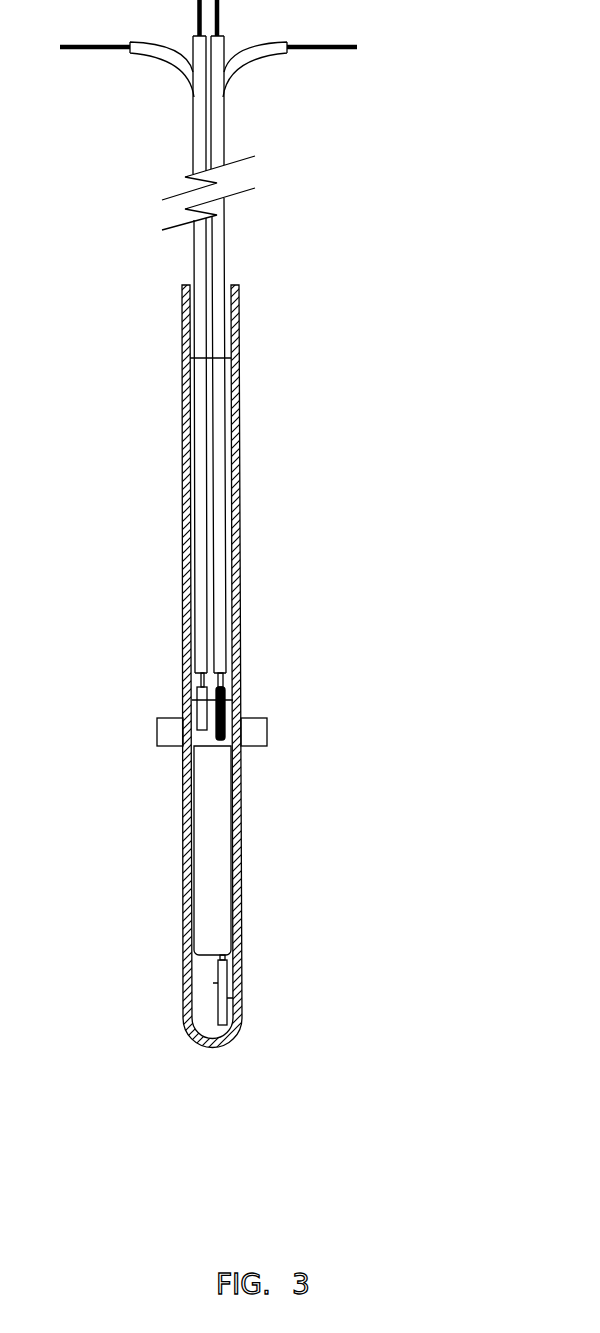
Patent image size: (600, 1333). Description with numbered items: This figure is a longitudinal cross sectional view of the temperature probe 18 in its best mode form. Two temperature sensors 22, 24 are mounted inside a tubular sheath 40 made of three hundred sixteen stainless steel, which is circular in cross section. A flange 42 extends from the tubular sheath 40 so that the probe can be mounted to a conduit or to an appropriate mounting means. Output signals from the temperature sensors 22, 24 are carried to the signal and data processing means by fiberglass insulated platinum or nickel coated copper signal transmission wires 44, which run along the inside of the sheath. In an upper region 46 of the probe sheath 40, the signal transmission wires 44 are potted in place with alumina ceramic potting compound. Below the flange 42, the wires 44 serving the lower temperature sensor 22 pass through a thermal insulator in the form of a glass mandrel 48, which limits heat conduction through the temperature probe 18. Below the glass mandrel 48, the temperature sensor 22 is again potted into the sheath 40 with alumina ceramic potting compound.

The temperature probe 18 is at (273, 527).
The temperature sensor 22 is at (232, 1015).
The temperature sensor 24 is at (197, 714).
The tubular sheath 40 is at (240, 817).
The flange 42 is at (257, 729).
The signal transmission wires 44 is at (229, 499).
The upper region 46 is at (229, 429).
The glass mandrel 48 is at (215, 875).